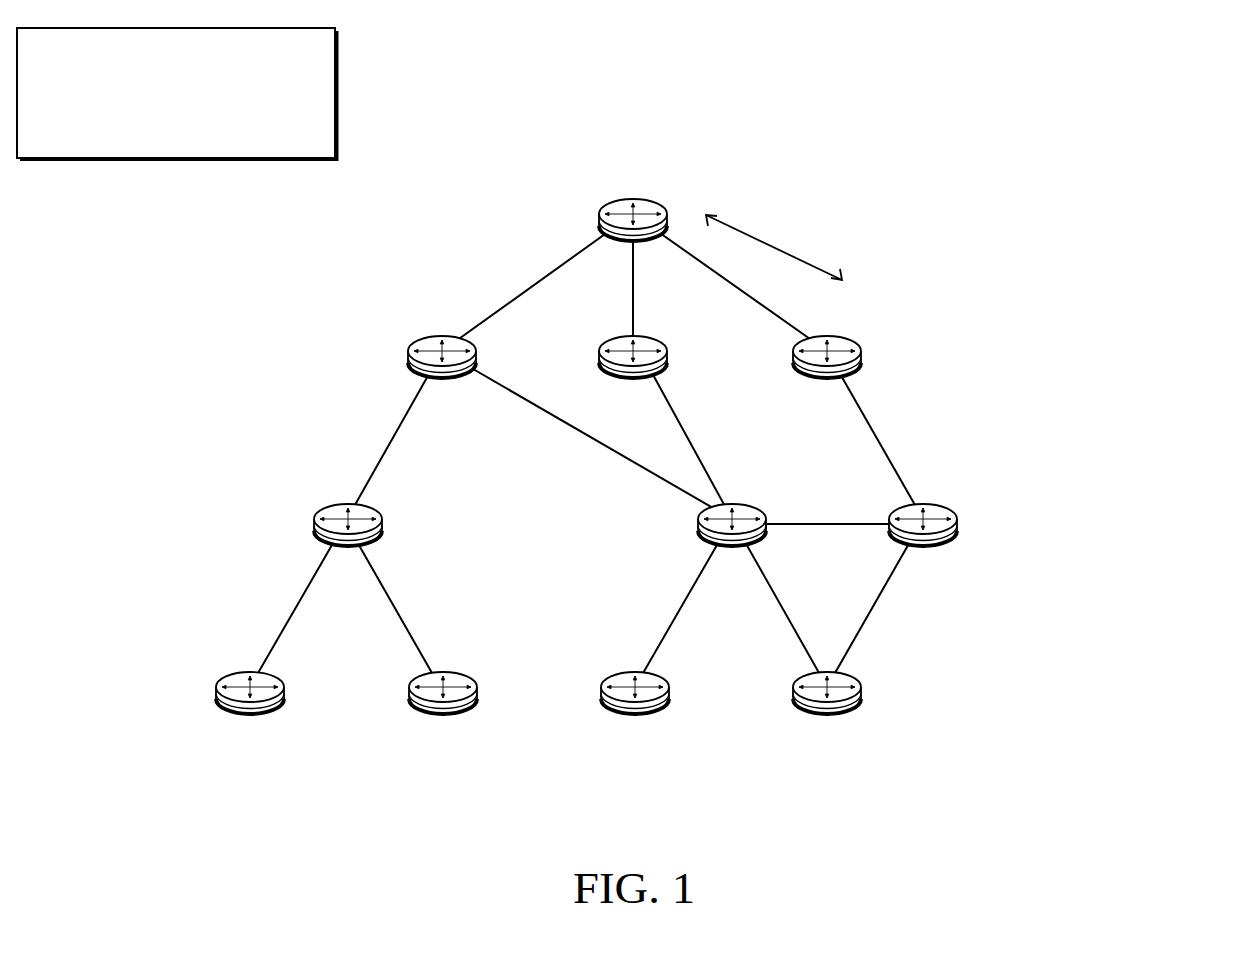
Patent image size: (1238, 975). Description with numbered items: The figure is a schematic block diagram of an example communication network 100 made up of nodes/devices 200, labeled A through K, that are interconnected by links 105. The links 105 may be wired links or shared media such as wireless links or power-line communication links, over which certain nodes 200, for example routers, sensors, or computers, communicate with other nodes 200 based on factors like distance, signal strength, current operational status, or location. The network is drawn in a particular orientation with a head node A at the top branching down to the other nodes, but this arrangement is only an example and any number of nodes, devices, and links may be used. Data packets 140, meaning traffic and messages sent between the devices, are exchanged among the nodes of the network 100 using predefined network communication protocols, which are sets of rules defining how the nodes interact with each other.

The communication network 100 is at (1143, 93).
The links 105 is at (140, 64).
The nodes/devices 200 is at (509, 404).
The data packets 140 is at (804, 229).